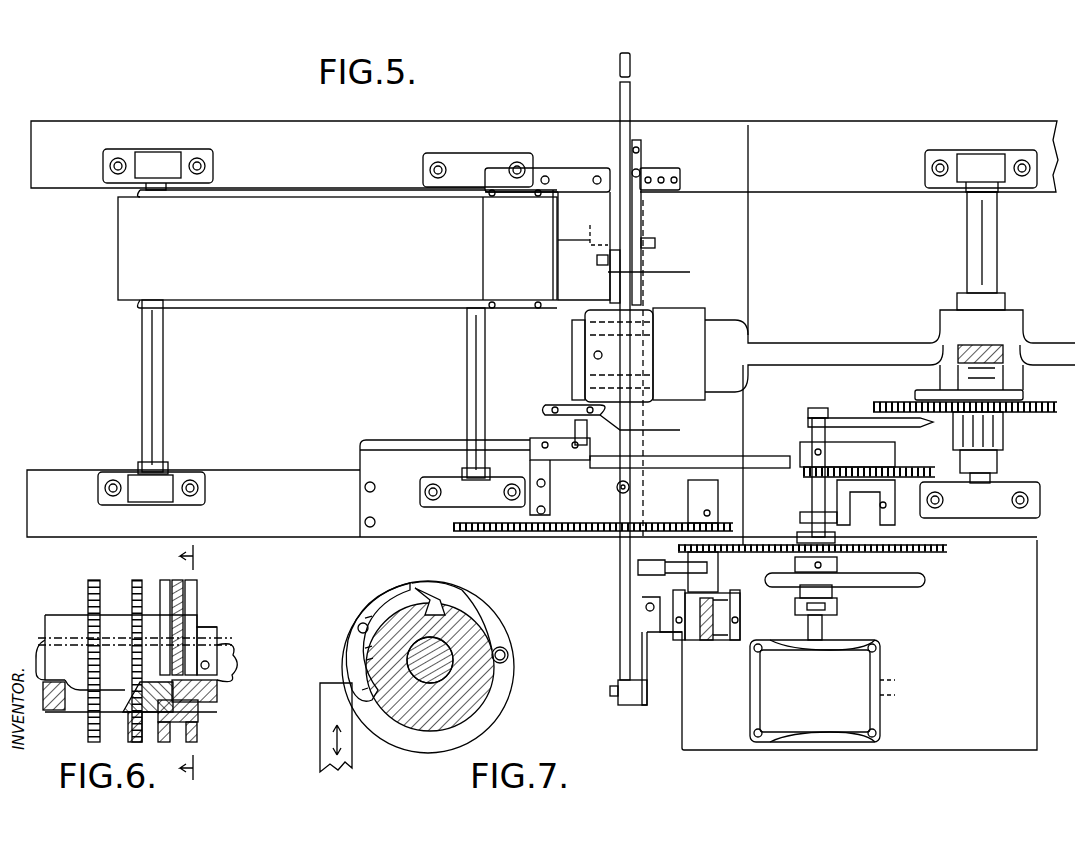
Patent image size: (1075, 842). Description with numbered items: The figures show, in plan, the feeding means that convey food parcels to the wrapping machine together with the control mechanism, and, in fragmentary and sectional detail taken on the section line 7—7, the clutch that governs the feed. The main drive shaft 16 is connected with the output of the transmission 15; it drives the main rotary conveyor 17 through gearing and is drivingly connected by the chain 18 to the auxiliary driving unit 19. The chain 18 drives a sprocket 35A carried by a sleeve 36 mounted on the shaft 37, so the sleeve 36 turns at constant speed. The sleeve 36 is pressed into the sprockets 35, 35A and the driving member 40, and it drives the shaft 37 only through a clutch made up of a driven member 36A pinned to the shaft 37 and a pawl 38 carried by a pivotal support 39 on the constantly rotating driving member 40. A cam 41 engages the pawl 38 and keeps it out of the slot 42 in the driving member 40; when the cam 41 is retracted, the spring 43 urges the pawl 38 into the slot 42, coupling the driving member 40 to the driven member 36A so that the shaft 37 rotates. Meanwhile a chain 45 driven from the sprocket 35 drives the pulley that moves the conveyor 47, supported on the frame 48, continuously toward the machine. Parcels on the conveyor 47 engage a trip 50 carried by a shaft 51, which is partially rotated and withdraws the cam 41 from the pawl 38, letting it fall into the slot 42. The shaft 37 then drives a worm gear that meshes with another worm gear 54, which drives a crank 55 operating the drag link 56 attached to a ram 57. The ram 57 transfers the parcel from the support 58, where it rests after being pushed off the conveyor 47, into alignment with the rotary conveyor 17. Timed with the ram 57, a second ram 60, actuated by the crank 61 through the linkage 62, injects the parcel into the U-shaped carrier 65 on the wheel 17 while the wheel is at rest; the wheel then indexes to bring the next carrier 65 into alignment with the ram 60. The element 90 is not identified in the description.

In FIG. 6, the section line 7— 7 is at (193, 662).
In FIG. 5, the transmission 15 is at (855, 718).
In FIG. 5, the main drive shaft 16 is at (830, 638).
In FIG. 5, the main rotary conveyor 17 is at (868, 345).
In FIG. 5, the chain 18 is at (848, 553).
In FIG. 5, the auxiliary driving unit 19 is at (735, 575).
In FIG. 6, the auxiliary driving unit 19 is at (68, 612).
In FIG. 5, the sprocket 35 is at (733, 527).
In FIG. 6, the sprocket 35 is at (100, 598).
In FIG. 5, the sprocket 35A is at (733, 547).
In FIG. 6, the sprocket 35A is at (140, 582).
In FIG. 6, the sleeve 36 is at (40, 640).
In FIG. 6, the driven member 36A is at (215, 628).
In FIG. 7, the driven member 36A is at (490, 630).
In FIG. 6, the shaft 37 is at (240, 650).
In FIG. 7, the shaft 37 is at (480, 673).
In FIG. 7, the pawl 38 is at (375, 603).
In FIG. 7, the pivotal support 39 is at (357, 624).
In FIG. 6, the driving member 40 is at (198, 598).
In FIG. 7, the driving member 40 is at (422, 745).
In FIG. 7, the cam 41 is at (320, 738).
In FIG. 7, the slot 42 is at (445, 615).
In FIG. 7, the spring 43 is at (452, 588).
In FIG. 5, the chain 45 is at (597, 537).
In FIG. 5, the conveyor 47 is at (289, 296).
In FIG. 5, the frame 48 is at (296, 490).
In FIG. 5, the trip 50 is at (595, 244).
In FIG. 5, the shaft 51 is at (653, 258).
In FIG. 5, the worm gear 54 is at (707, 640).
In FIG. 5, the crank 55 is at (646, 645).
In FIG. 5, the drag link 56 is at (632, 625).
In FIG. 5, the ram 57 is at (562, 200).
In FIG. 5, the support 58 is at (568, 238).
In FIG. 5, the ram 60 is at (572, 358).
In FIG. 5, the crank 61 is at (745, 480).
In FIG. 5, the linkage 62 is at (675, 460).
In FIG. 5, the U-shaped carrier 65 is at (697, 322).
In FIG. 5, the frame 90 is at (925, 548).